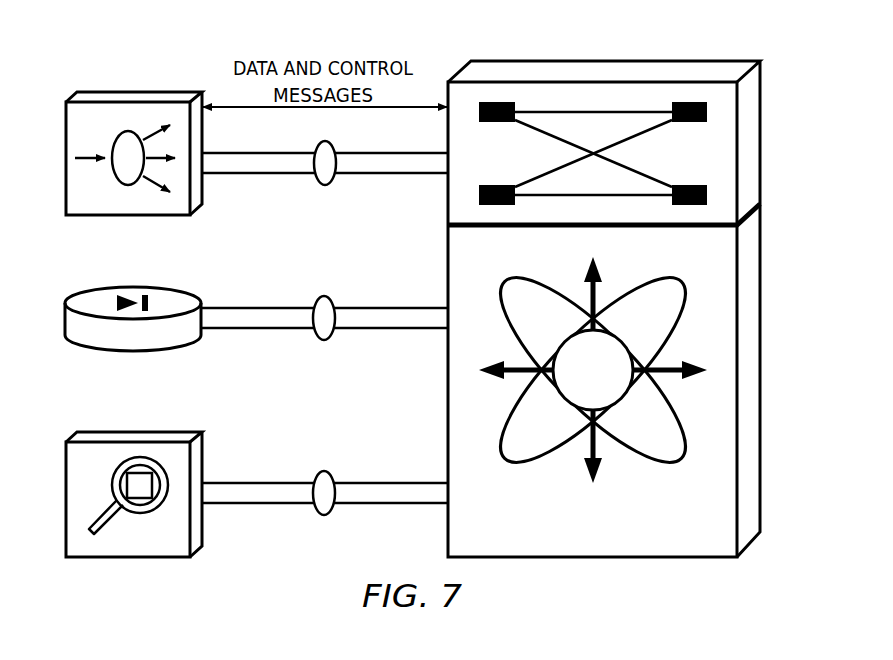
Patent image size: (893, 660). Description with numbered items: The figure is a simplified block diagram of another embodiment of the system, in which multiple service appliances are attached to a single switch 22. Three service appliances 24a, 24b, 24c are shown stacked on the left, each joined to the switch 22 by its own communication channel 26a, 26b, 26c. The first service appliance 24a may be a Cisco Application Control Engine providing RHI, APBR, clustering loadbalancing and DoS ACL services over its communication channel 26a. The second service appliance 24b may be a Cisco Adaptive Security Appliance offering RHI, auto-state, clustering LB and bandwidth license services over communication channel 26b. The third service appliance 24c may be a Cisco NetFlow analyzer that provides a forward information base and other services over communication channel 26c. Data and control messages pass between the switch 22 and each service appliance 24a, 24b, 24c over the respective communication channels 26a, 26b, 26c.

The switch 22 is at (750, 403).
The service appliance 24a is at (127, 91).
The service appliance 24b is at (127, 351).
The service appliance 24c is at (127, 559).
The communication channel 26a is at (328, 143).
The communication channel 26b is at (327, 298).
The communication channel 26c is at (327, 473).